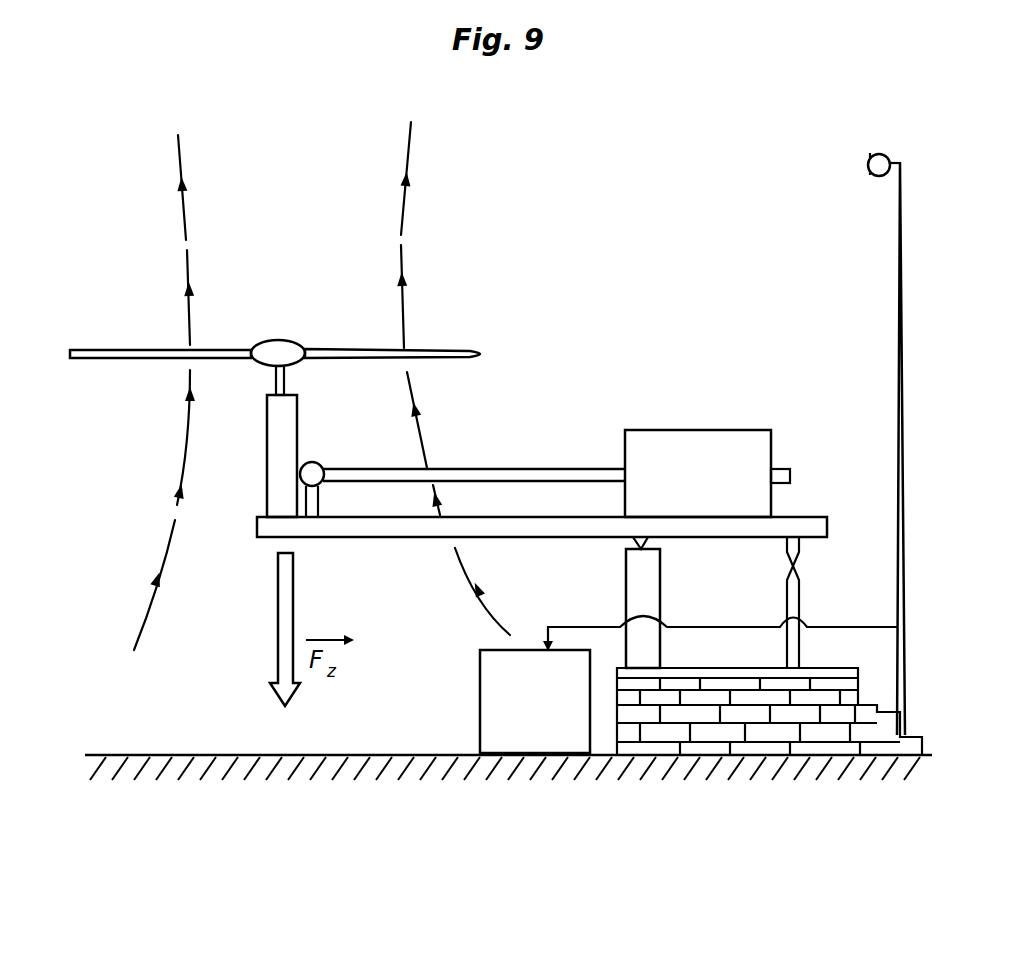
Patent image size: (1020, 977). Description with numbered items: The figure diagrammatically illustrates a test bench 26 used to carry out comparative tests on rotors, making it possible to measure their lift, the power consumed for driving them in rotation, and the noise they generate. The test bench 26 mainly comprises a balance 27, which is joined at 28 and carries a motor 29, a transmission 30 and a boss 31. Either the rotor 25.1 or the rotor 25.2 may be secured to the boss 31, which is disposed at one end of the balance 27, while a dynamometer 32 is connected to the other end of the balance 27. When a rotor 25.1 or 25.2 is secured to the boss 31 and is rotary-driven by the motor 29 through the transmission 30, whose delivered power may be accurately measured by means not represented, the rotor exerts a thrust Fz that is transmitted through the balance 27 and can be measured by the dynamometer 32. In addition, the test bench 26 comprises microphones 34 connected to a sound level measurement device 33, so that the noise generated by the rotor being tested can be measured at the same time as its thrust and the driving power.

The rotor 25.1 is at (380, 345).
The rotor 25.2 is at (392, 353).
The test bench 26 is at (714, 405).
The balance 27 is at (550, 541).
The joint 28 is at (647, 541).
The motor 29 is at (760, 456).
The transmission 30 is at (482, 470).
The boss 31 is at (298, 432).
The dynamometer 32 is at (798, 567).
The sound level measurement device 33 is at (532, 725).
The microphone 34 is at (878, 156).